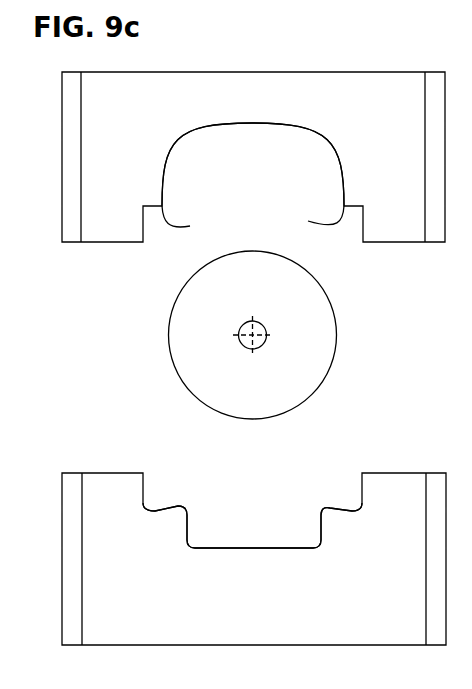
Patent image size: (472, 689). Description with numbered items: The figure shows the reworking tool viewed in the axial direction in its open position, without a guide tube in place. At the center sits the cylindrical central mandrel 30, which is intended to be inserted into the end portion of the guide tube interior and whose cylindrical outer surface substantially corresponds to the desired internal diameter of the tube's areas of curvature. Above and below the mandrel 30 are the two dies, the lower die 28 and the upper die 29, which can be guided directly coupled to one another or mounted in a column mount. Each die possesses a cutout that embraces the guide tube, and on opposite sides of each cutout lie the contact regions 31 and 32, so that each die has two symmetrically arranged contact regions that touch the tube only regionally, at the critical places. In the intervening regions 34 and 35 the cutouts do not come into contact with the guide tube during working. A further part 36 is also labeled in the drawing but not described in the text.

The lower die 28 is at (306, 93).
The upper die 29 is at (248, 620).
The cylindrical central mandrel 30 is at (307, 339).
The contact region 31 is at (253, 222).
The contact region 32 is at (180, 507).
The intervening region 34 is at (253, 164).
The intervening region 35 is at (248, 547).
The lower die feature 36 is at (328, 688).